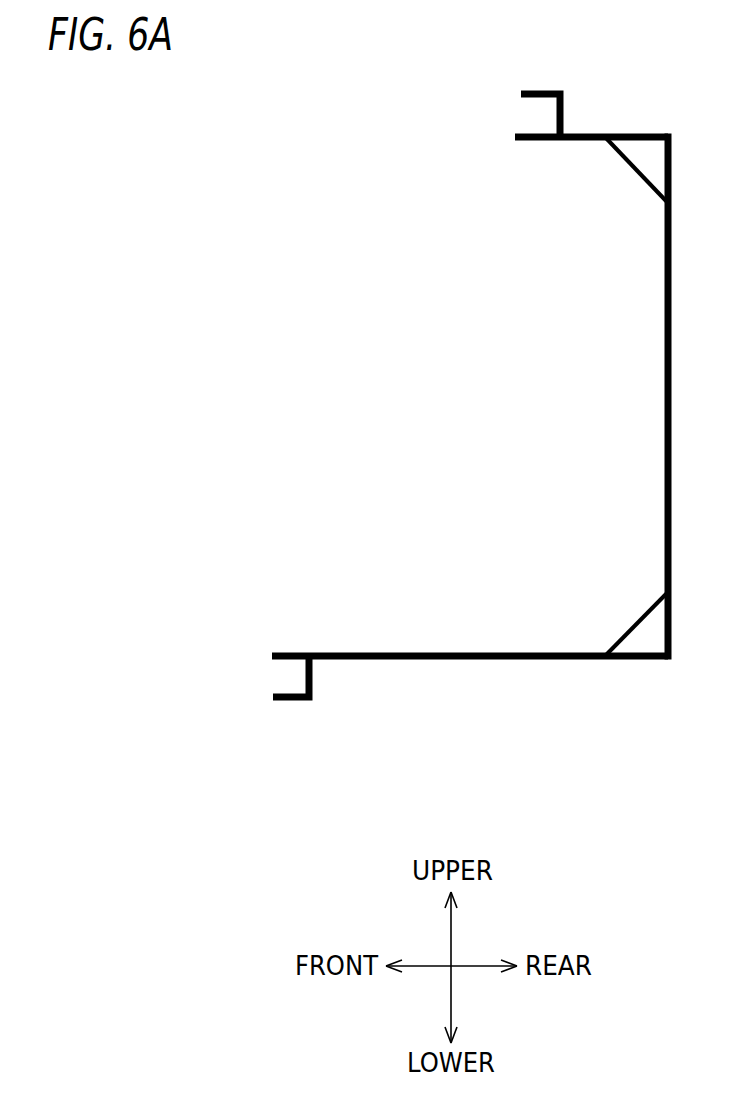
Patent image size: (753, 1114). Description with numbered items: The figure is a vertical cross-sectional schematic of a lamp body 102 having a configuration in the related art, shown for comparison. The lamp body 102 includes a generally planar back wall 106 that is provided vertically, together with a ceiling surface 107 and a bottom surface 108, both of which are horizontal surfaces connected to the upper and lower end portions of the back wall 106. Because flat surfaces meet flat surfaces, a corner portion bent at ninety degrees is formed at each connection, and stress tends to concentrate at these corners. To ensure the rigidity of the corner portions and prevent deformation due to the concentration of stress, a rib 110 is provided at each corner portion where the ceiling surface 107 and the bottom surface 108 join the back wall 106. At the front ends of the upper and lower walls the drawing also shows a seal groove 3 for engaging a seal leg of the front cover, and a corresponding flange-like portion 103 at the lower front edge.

The lamp body 102 is at (298, 287).
The seal groove 3 is at (535, 97).
The lower flange 103 is at (290, 650).
The back wall 106 is at (665, 413).
The ceiling surface 107 is at (582, 140).
The bottom surface 108 is at (417, 650).
The rib 110 is at (637, 172).